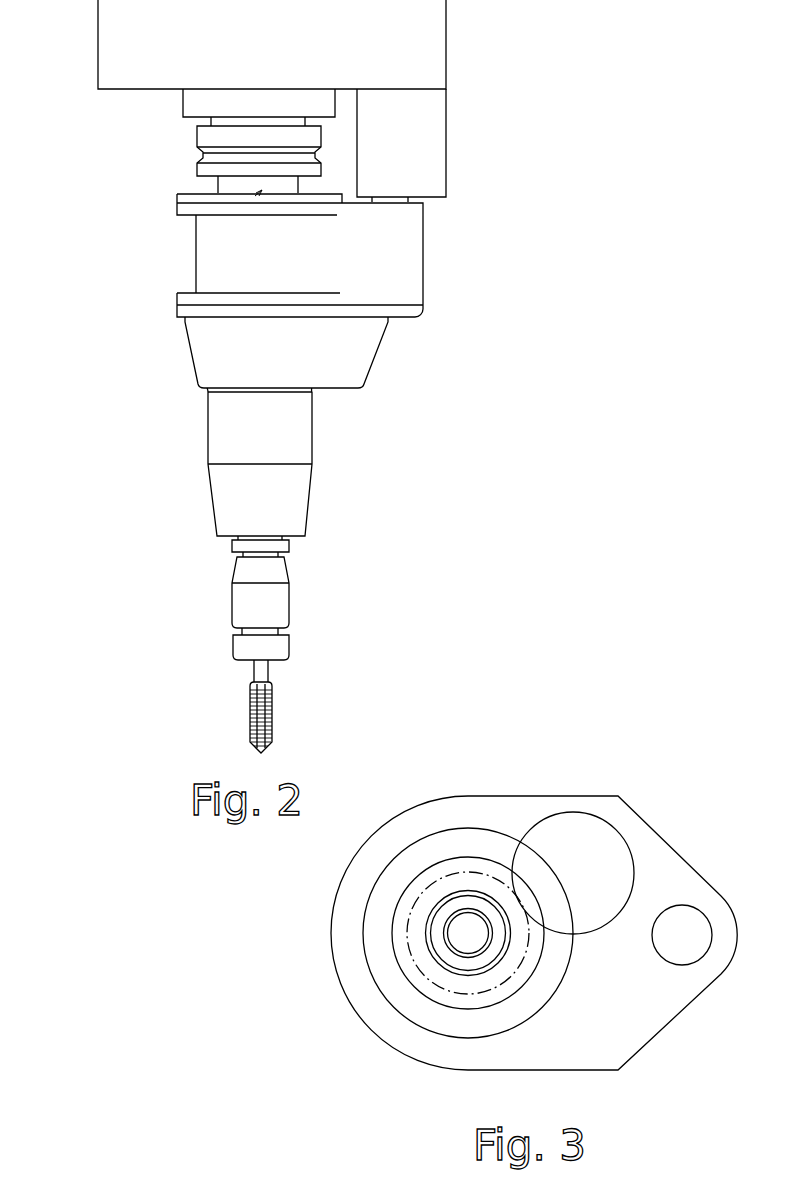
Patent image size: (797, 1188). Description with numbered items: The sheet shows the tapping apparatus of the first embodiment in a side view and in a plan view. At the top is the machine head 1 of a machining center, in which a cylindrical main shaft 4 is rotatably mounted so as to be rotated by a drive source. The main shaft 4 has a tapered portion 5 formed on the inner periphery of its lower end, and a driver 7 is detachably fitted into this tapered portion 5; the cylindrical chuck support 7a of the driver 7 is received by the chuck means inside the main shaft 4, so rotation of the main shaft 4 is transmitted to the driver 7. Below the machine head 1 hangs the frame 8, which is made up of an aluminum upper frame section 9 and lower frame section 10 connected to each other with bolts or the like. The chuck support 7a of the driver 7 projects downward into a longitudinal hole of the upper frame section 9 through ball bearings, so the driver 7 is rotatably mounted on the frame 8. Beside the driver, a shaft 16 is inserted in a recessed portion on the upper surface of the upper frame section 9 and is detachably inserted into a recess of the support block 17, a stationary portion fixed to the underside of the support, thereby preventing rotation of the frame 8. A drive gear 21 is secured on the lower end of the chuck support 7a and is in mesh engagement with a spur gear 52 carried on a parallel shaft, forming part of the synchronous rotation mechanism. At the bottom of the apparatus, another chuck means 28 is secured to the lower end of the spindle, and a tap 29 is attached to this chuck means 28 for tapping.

In FIG. 2, the machine head 1 is at (98, 68).
In FIG. 2, the main shaft 4 is at (182, 107).
In FIG. 2, the driver 7 is at (197, 172).
In FIG. 3, the driver 7 is at (463, 828).
In FIG. 2, the support block 17 is at (446, 142).
In FIG. 2, the upper frame section 9 is at (424, 248).
In FIG. 2, the frame 8 is at (430, 308).
In FIG. 3, the frame 8 is at (583, 795).
In FIG. 2, the lower frame section 10 is at (375, 362).
In FIG. 2, the chuck means 28 is at (290, 597).
In FIG. 2, the tap 29 is at (273, 702).
In FIG. 3, the spur gear 52 is at (558, 812).
In FIG. 3, the shaft 16 is at (690, 908).
In FIG. 3, the tapered portion 5 is at (397, 935).
In FIG. 3, the chuck support 7a is at (453, 942).
In FIG. 3, the drive gear 21 is at (442, 988).